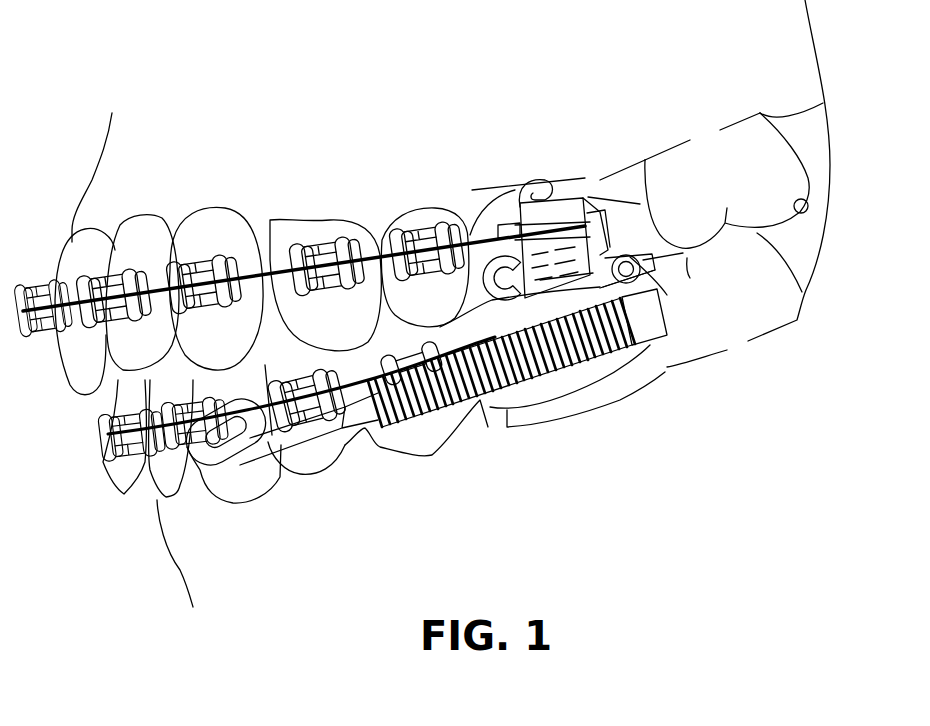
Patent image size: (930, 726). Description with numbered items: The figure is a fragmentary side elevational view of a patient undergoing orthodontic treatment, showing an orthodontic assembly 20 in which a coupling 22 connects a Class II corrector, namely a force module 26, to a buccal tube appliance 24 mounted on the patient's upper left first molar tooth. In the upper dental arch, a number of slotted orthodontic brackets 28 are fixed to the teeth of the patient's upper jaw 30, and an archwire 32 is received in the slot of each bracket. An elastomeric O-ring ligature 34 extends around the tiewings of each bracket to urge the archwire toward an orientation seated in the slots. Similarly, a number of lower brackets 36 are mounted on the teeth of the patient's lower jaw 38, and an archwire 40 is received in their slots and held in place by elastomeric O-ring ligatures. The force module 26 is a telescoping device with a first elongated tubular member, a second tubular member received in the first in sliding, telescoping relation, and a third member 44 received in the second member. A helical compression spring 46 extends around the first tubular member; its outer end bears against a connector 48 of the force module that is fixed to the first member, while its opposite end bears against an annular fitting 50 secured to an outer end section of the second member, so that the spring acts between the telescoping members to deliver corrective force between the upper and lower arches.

The orthodontic assembly 20 is at (665, 462).
The coupling 22 is at (468, 252).
The buccal tube appliance 24 is at (572, 185).
The force module 26 is at (418, 440).
The slotted orthodontic brackets 28 is at (172, 260).
The upper jaw 30 is at (112, 163).
The archwire 32 is at (270, 243).
The elastomeric O-ring ligature 34 is at (384, 252).
The lower brackets 36 is at (134, 470).
The lower jaw 38 is at (198, 567).
The archwire 40 is at (287, 458).
The third member 44 is at (313, 433).
The helical compression spring 46 is at (540, 388).
The connector 48 is at (650, 325).
The annular fitting 50 is at (385, 428).